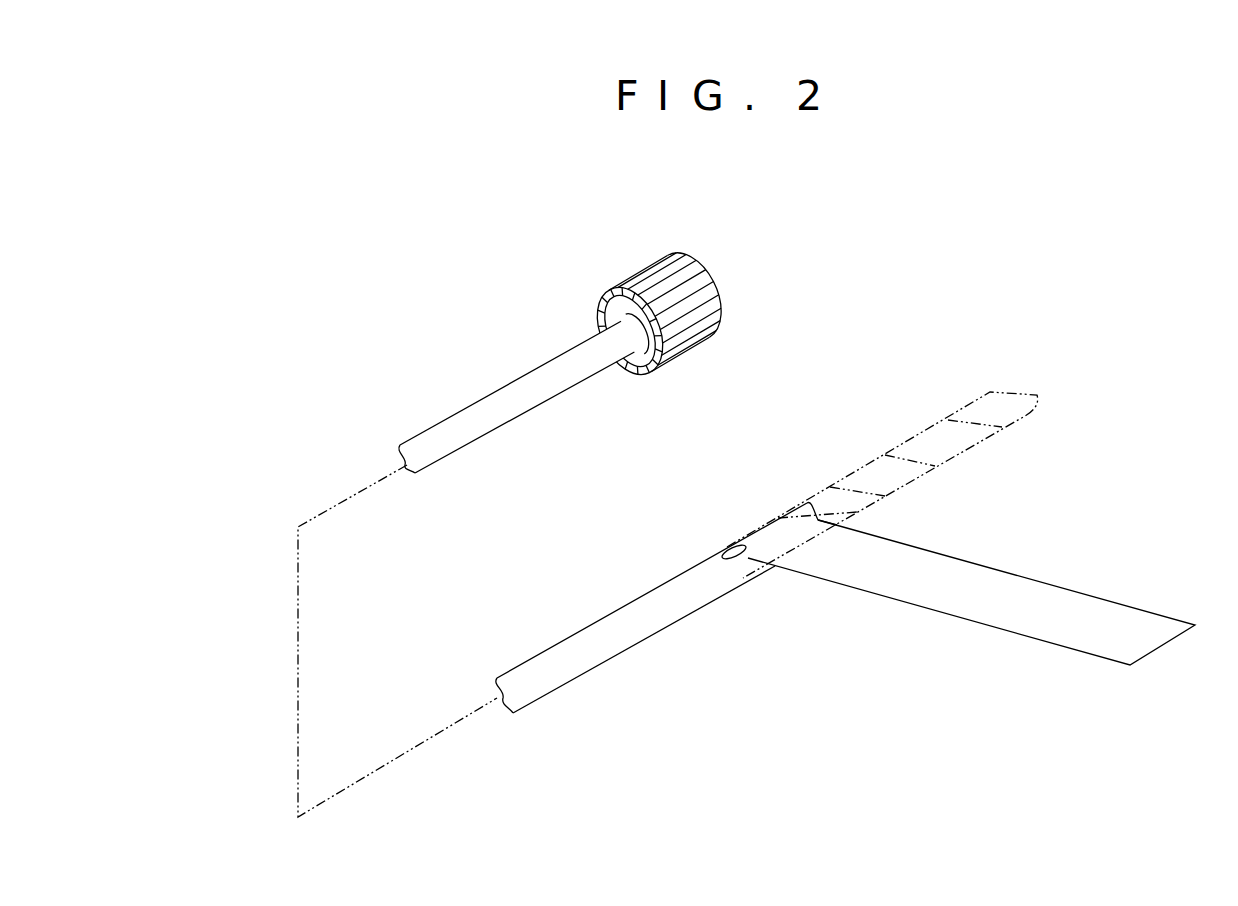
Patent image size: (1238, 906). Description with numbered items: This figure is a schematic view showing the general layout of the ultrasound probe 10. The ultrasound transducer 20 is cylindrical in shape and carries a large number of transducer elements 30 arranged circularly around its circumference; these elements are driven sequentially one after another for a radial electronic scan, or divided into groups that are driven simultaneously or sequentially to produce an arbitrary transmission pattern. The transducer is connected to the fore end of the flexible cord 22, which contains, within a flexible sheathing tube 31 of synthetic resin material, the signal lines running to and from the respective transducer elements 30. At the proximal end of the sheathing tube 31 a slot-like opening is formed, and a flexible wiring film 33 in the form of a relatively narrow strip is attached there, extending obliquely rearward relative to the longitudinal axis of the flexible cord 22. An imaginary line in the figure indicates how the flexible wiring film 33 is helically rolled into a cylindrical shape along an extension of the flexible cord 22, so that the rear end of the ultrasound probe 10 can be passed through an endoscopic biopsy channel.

The ultrasound probe 10 is at (442, 295).
The ultrasound transducer 20 is at (733, 276).
The flexible cord 22 is at (466, 397).
The transducer elements 30 is at (638, 285).
The flexible sheathing tube 31 is at (553, 678).
The flexible wiring film 33 is at (1060, 638).